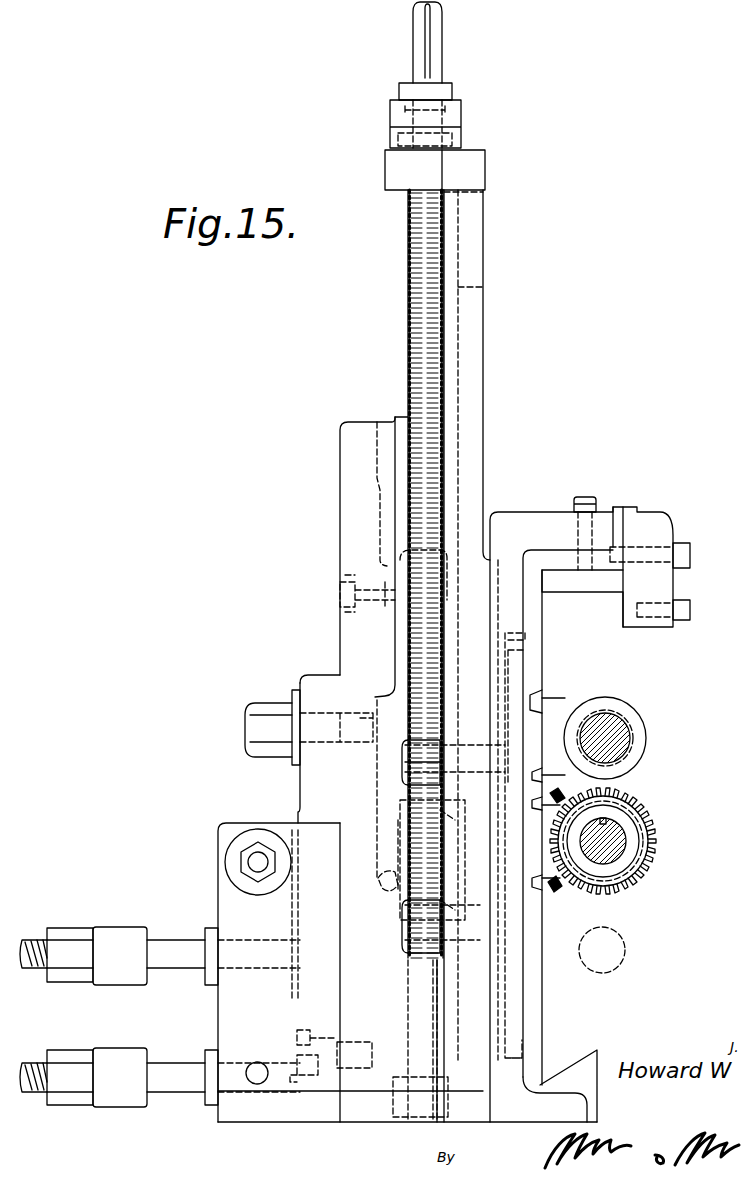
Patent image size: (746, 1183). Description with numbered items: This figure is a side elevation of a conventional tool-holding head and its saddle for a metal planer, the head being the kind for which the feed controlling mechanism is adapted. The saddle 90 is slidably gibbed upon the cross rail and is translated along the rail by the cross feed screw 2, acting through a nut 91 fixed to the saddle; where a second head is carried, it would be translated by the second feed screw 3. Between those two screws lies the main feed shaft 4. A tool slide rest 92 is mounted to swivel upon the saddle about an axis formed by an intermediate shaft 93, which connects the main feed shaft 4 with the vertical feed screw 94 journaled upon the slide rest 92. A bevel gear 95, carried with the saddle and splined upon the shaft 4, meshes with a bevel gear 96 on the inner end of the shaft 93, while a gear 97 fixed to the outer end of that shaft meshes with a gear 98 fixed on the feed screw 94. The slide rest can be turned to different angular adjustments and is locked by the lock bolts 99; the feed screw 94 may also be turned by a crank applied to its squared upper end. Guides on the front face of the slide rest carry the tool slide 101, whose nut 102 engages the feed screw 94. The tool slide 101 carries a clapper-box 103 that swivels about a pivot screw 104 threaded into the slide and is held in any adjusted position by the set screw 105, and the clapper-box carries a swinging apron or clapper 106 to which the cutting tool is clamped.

The cross feed screw 2 is at (632, 745).
The second feed screw 3 is at (618, 940).
The main feed shaft 4 is at (623, 838).
The saddle 90 is at (529, 522).
The nut 91 is at (641, 716).
The tool slide rest 92 is at (485, 382).
The intermediate shaft 93 is at (496, 823).
The vertical feed screw 94 is at (408, 343).
The bevel gear 95 is at (642, 816).
The bevel gear 96 is at (555, 795).
The gear 97 is at (452, 840).
The gear 98 is at (384, 876).
The lock bolts 99 is at (460, 745).
The tool slide 101 is at (355, 492).
The nut 102 is at (448, 548).
The clapper-box 103 is at (227, 823).
The screw 104 is at (313, 1040).
The set screw 105 is at (255, 706).
The swinging apron or clapper 106 is at (213, 1105).